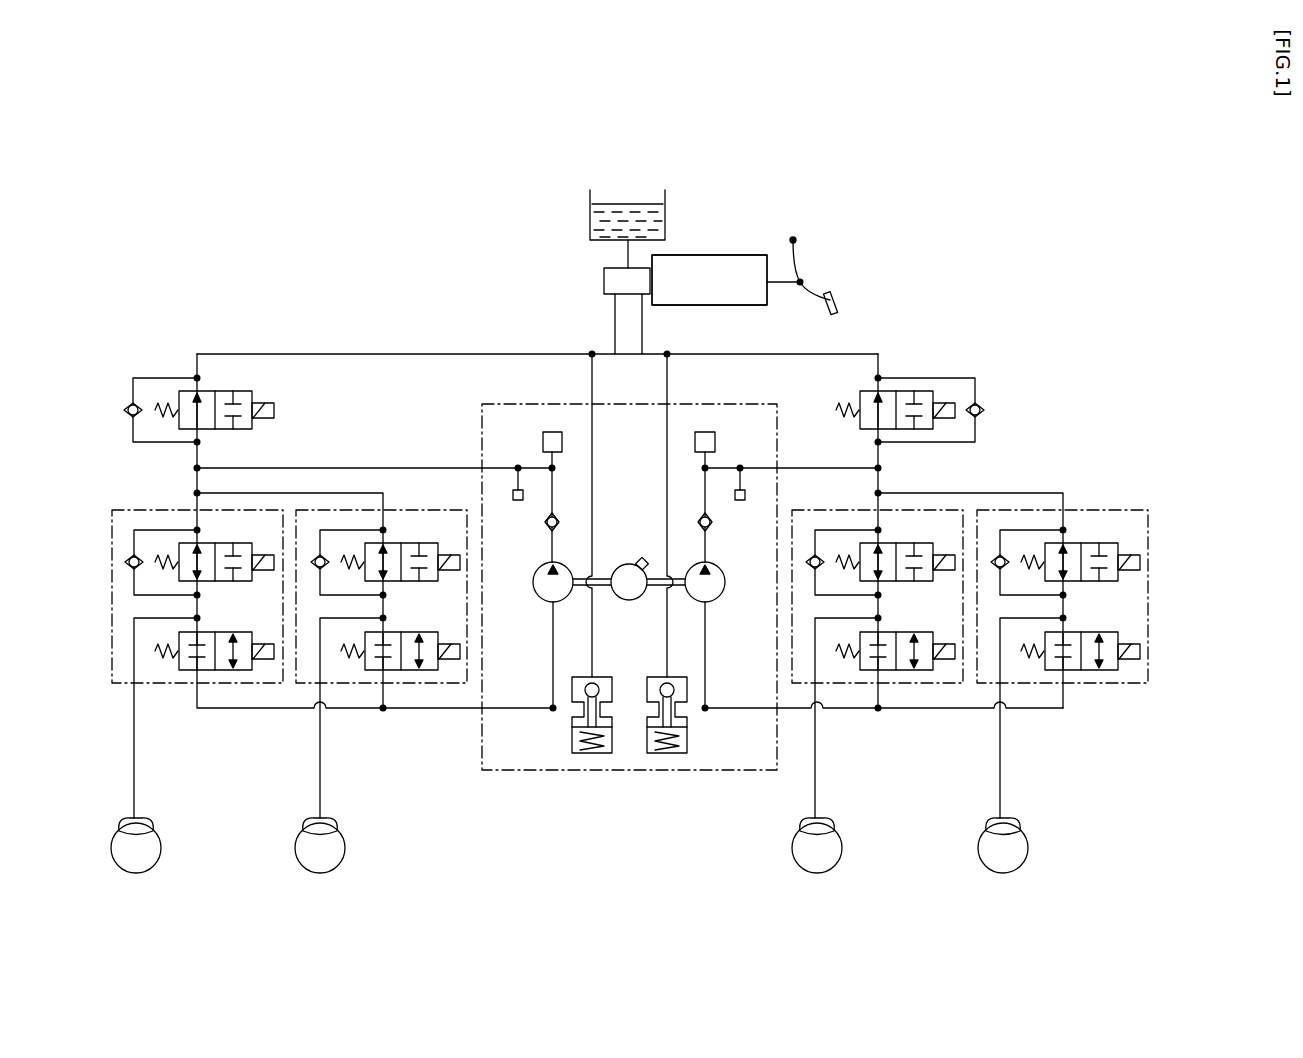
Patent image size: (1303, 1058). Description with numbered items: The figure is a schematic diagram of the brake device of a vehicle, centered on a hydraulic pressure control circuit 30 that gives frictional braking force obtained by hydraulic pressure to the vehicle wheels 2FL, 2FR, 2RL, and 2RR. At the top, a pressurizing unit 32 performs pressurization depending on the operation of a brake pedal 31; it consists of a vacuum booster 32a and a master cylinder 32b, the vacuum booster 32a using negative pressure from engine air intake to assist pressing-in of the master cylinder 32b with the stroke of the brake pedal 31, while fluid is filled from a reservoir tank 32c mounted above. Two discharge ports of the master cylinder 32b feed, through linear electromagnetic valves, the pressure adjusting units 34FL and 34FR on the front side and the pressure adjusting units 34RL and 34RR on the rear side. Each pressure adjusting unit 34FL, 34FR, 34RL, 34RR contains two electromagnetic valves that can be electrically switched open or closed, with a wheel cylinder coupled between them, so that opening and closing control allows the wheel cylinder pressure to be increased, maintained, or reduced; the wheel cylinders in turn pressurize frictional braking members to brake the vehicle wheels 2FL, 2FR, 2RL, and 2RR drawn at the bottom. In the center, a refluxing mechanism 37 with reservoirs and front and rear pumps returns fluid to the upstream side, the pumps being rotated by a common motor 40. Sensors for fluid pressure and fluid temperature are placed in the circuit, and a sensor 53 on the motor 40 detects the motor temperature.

The hydraulic pressure control circuit 30 is at (950, 210).
The brake pedal 31 is at (840, 300).
The pressurizing unit 32 is at (768, 243).
The vacuum booster 32a is at (740, 255).
The master cylinder 32b is at (604, 281).
The reservoir tank 32c is at (665, 228).
The pressure adjusting unit 34FL is at (123, 508).
The pressure adjusting unit 34FR is at (395, 508).
The pressure adjusting unit 34RL is at (800, 508).
The pressure adjusting unit 34RR is at (1080, 508).
The refluxing mechanism 37 is at (672, 770).
The motor 40 is at (628, 600).
The sensor 53 is at (640, 558).
The vehicle wheel 2FL is at (134, 860).
The vehicle wheel 2FR is at (318, 860).
The vehicle wheel 2RL is at (815, 860).
The vehicle wheel 2RR is at (1001, 860).